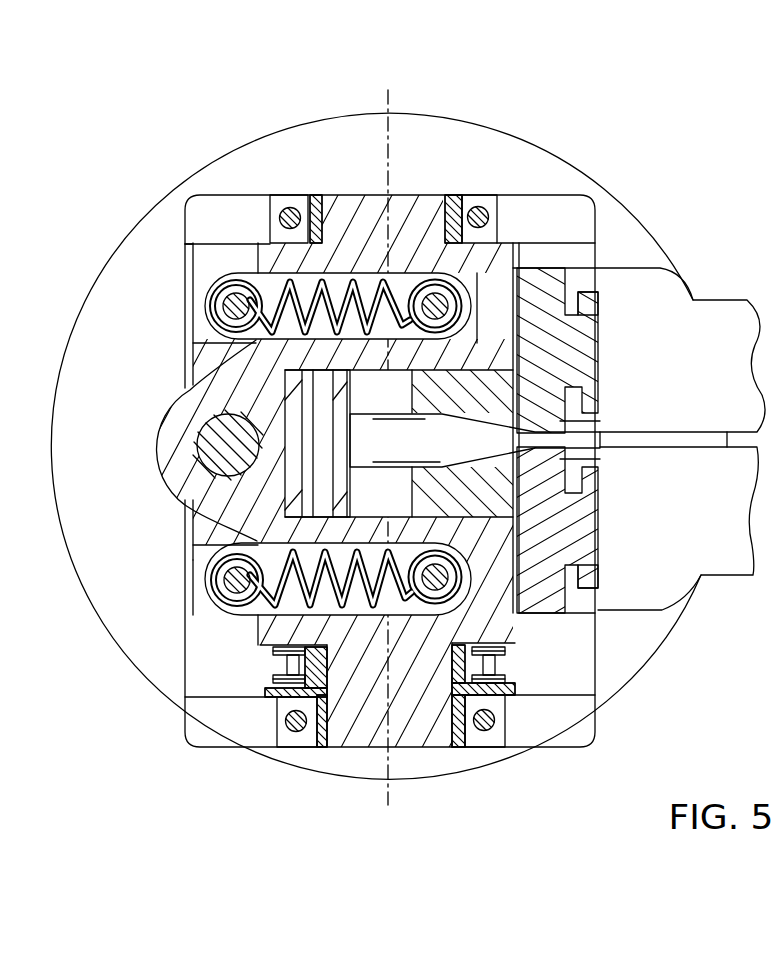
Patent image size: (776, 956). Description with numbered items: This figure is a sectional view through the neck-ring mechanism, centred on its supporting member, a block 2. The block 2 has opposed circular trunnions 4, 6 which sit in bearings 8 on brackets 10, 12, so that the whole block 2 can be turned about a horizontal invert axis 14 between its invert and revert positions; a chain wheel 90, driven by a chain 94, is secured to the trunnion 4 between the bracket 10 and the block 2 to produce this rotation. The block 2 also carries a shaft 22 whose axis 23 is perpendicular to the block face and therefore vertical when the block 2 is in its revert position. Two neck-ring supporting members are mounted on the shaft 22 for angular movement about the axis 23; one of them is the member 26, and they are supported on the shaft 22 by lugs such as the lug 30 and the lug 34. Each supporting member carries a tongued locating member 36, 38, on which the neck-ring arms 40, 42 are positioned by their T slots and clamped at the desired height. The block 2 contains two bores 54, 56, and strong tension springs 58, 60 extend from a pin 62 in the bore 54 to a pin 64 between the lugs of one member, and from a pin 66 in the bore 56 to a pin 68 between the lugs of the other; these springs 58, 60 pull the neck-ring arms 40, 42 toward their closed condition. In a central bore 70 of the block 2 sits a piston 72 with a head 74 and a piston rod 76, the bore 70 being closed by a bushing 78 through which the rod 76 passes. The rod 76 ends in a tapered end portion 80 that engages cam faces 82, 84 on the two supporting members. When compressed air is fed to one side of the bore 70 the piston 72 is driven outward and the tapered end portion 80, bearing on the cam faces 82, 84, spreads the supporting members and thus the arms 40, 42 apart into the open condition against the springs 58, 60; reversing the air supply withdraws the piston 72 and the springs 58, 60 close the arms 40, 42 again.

The block 2 is at (422, 195).
The trunnion 4 is at (365, 195).
The trunnion 6 is at (420, 737).
The bearings 8 is at (458, 195).
The bracket 10 is at (297, 733).
The bracket 12 is at (493, 195).
The horizontal invert axis 14 is at (395, 97).
The shaft 22 is at (228, 445).
The axis 23 is at (223, 447).
The neck-ring supporting member 26 is at (550, 593).
The lug 30 is at (210, 340).
The lug 34 is at (287, 518).
The tongued locating member 36 is at (583, 330).
The tongued locating member 38 is at (578, 513).
The neck-ring arm 40 is at (698, 366).
The neck-ring arm 42 is at (699, 515).
The bore 54 is at (350, 273).
The bore 56 is at (273, 642).
The tension spring 58 is at (283, 297).
The tension spring 60 is at (343, 603).
The pin 62 is at (436, 298).
The pin 64 is at (225, 293).
The pin 66 is at (570, 558).
The pin 68 is at (237, 583).
The central bore 70 is at (393, 520).
The piston 72 is at (432, 461).
The head 74 is at (262, 540).
The piston rod 76 is at (477, 433).
The bushing 78 is at (428, 408).
The tapered end portion 80 is at (610, 450).
The cam face 82 is at (580, 421).
The cam face 84 is at (578, 460).
The chain wheel 90 is at (277, 660).
The chain 94 is at (505, 663).